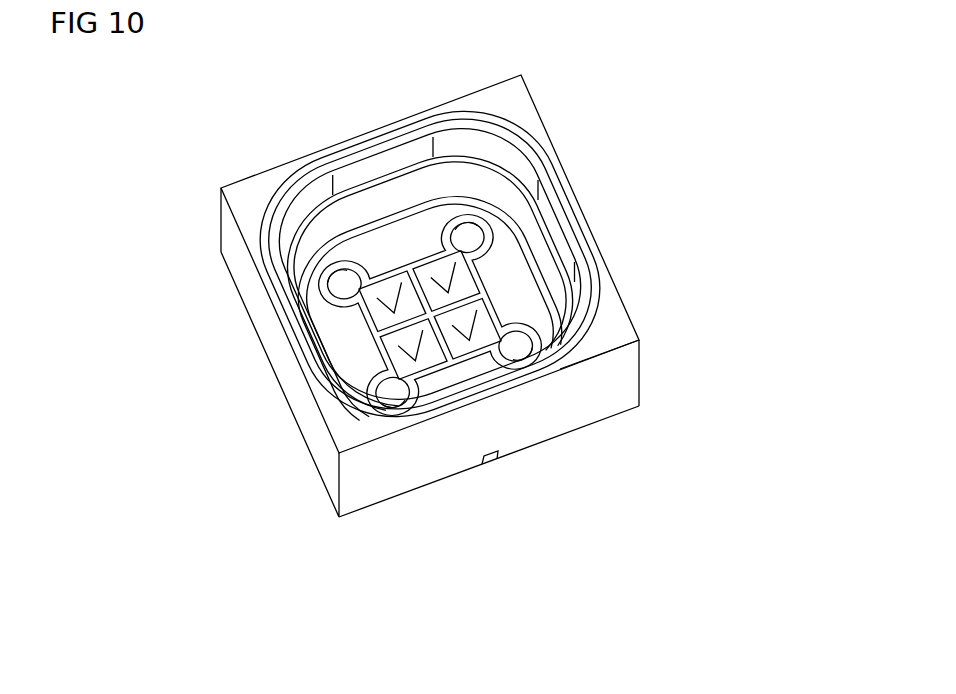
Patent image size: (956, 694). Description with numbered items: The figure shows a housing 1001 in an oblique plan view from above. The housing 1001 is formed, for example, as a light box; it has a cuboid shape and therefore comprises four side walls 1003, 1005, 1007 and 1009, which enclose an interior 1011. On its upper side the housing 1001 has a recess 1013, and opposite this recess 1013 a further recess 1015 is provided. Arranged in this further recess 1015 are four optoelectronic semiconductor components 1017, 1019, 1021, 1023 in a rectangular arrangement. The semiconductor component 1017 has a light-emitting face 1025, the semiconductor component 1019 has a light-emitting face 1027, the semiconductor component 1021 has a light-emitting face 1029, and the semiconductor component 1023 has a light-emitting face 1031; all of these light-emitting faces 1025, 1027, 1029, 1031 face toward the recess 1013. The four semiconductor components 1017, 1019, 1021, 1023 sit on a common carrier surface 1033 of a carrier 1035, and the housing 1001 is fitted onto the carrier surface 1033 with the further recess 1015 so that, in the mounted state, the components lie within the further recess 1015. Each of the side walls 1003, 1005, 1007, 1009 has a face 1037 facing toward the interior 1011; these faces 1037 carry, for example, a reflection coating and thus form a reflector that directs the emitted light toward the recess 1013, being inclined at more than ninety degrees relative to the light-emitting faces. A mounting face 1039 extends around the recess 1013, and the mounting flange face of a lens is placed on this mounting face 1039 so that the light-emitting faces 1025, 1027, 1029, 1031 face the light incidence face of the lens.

The housing 1001 is at (592, 98).
The side wall 1003 is at (477, 440).
The side wall 1005 is at (573, 277).
The side wall 1007 is at (338, 131).
The side wall 1009 is at (283, 372).
The interior 1011 is at (520, 292).
The recess 1013 is at (515, 202).
The further recess 1015 is at (392, 382).
The optoelectronic semiconductor component 1017 is at (605, 342).
The optoelectronic semiconductor component 1019 is at (440, 392).
The optoelectronic semiconductor component 1021 is at (368, 320).
The optoelectronic semiconductor component 1023 is at (430, 255).
The light-emitting face 1025 is at (600, 358).
The light-emitting face 1027 is at (450, 362).
The light-emitting face 1029 is at (340, 292).
The light-emitting face 1031 is at (480, 253).
The carrier surface 1033 is at (487, 372).
The carrier 1035 is at (497, 457).
The face 1037 is at (385, 205).
The mounting face 1039 is at (250, 188).